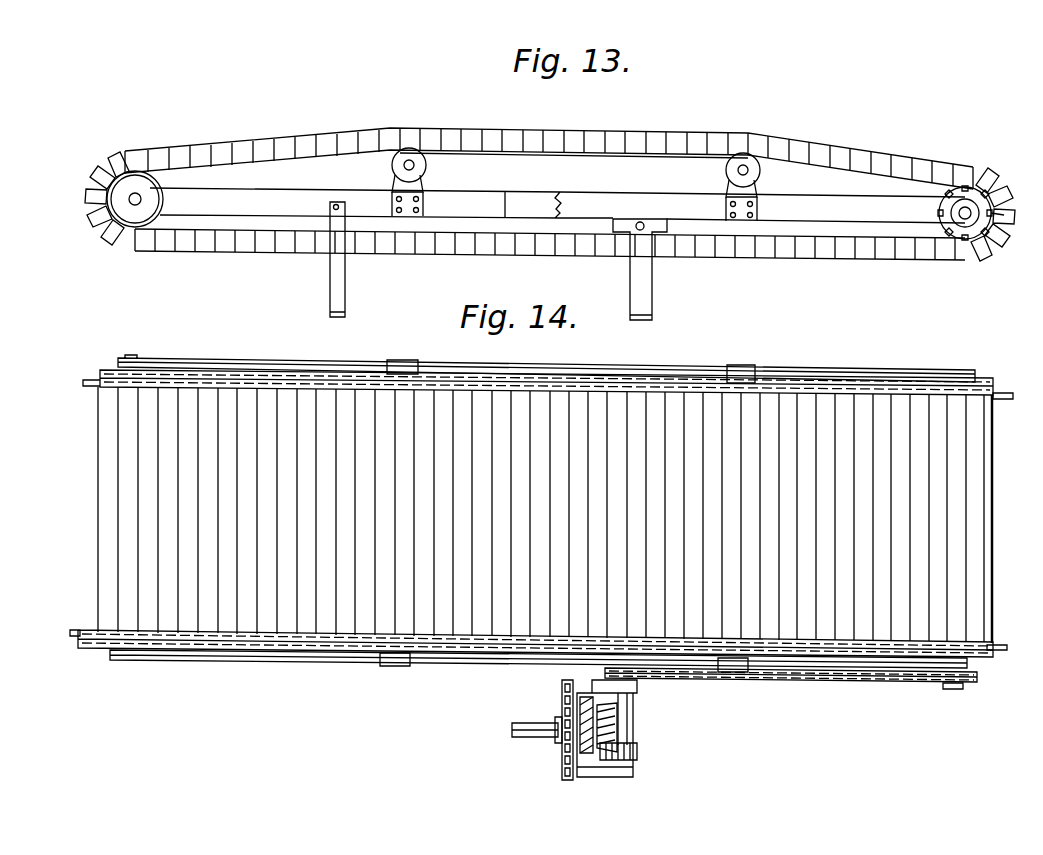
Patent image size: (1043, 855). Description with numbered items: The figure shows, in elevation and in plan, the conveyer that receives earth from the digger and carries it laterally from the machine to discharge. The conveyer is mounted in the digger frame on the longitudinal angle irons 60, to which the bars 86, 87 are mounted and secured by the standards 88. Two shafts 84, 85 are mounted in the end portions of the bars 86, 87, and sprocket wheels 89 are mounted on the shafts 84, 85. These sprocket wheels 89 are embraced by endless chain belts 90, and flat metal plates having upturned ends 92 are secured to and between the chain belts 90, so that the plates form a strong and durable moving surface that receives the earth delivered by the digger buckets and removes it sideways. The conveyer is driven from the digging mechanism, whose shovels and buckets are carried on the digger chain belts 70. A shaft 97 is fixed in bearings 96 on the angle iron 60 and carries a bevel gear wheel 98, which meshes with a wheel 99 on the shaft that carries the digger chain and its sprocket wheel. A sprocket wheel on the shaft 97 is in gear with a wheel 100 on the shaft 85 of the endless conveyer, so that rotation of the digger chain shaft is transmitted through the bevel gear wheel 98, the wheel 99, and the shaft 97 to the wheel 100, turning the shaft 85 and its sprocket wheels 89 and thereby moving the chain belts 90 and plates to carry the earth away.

In FIG. 14, the longitudinal angle irons 60 is at (565, 750).
In FIG. 14, the chain belts 70 is at (558, 701).
In FIG. 13, the shaft 84 is at (142, 200).
In FIG. 13, the shaft 85 is at (940, 213).
In FIG. 13, the bar 86 is at (762, 207).
In FIG. 14, the bar 86 is at (312, 661).
In FIG. 13, the bar 87 is at (355, 203).
In FIG. 14, the bar 87 is at (362, 368).
In FIG. 13, the standards 88 is at (345, 292).
In FIG. 13, the sprocket wheels 89 is at (132, 220).
In FIG. 13, the endless chain belts 90 is at (700, 157).
In FIG. 14, the endless chain belts 90 is at (612, 376).
In FIG. 13, the upturned ends 92 is at (700, 133).
In FIG. 14, the bearings 96 is at (627, 690).
In FIG. 14, the shaft 97 is at (630, 718).
In FIG. 14, the bevel gear wheel 98 is at (638, 757).
In FIG. 14, the wheel 99 is at (592, 693).
In FIG. 13, the wheel 100 is at (1004, 215).
In FIG. 14, the wheel 100 is at (956, 689).